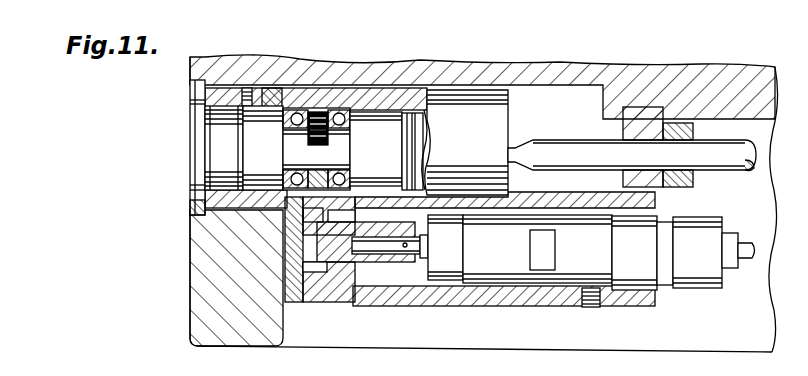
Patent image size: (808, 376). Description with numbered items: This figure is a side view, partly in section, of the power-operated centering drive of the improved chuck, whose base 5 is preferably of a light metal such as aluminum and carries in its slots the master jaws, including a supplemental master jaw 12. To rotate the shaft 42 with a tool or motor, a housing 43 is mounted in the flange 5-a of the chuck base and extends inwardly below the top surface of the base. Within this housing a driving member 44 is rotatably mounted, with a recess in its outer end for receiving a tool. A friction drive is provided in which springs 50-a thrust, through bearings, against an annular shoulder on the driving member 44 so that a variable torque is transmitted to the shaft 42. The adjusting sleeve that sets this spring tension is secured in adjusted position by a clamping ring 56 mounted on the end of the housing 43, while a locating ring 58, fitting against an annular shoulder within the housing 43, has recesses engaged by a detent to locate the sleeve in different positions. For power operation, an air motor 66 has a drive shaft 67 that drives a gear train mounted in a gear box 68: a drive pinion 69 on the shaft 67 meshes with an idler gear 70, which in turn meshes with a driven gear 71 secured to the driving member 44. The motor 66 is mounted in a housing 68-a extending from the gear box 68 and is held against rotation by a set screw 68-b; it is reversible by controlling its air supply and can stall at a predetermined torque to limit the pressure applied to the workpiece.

The base 5 is at (355, 62).
The flange 5-a is at (196, 300).
The supplemental master jaw 12 is at (304, 40).
The clamping ring 56 is at (198, 143).
The locating ring 58 is at (243, 138).
The driving member 44 is at (277, 151).
The springs 50-a is at (287, 150).
The driven gear 71 is at (340, 143).
The housing 43 is at (476, 140).
The shaft 42 is at (717, 160).
The idler gear 70 is at (305, 212).
The gear box 68 is at (338, 303).
The drive pinion 69 is at (378, 262).
The housing 68-a is at (494, 306).
The set screw 68-b is at (588, 307).
The drive shaft 67 is at (418, 247).
The air motor 66 is at (587, 256).